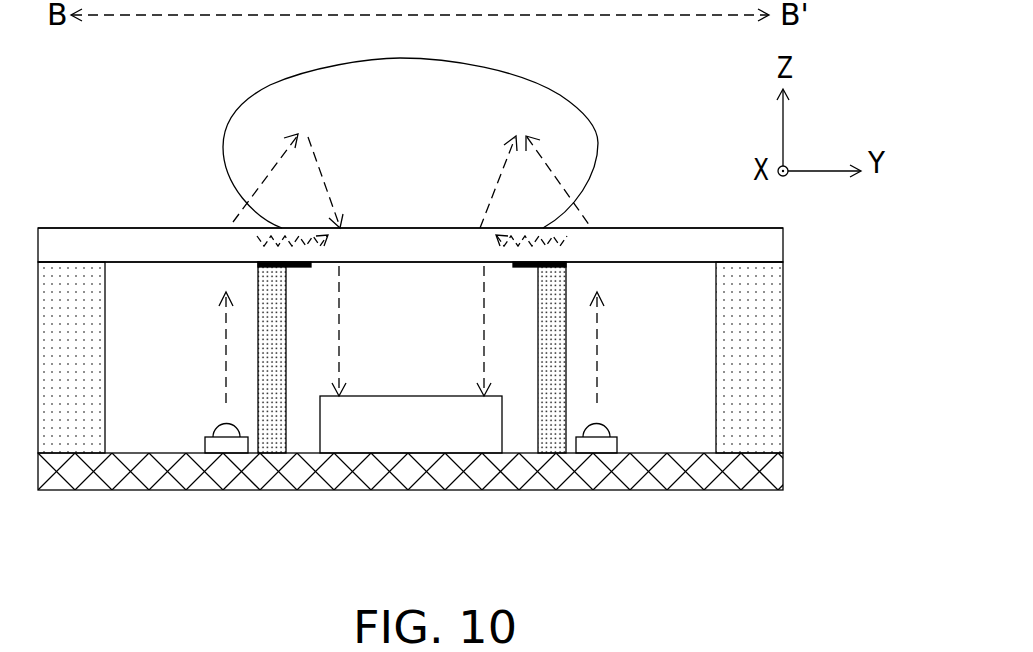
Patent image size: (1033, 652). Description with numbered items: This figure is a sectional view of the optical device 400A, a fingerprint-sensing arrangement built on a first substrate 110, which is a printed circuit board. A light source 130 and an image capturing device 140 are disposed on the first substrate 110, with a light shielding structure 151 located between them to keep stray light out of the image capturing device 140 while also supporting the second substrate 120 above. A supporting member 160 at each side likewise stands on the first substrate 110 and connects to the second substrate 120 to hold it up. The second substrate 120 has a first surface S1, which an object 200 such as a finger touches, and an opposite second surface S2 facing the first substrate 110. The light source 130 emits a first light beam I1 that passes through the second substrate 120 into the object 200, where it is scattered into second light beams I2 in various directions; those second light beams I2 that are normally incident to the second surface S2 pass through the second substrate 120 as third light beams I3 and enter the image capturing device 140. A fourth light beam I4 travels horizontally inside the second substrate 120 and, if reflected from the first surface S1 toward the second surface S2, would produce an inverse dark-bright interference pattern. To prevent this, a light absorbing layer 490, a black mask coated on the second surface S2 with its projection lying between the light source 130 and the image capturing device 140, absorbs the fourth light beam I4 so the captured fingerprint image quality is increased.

The optical device 400A is at (105, 135).
The object 200 is at (600, 147).
The second substrate 120 is at (770, 244).
The first substrate 110 is at (770, 472).
The light source 130 is at (600, 450).
The image capturing device 140 is at (402, 432).
The light shielding structure 151 is at (548, 448).
The supporting member 160 is at (80, 432).
The light absorbing layer 490 is at (566, 262).
The first surface S1 is at (136, 225).
The second surface S2 is at (140, 264).
The first light beam I1 is at (597, 363).
The second light beams I2 is at (503, 165).
The third light beams I3 is at (411, 331).
The fourth light beam I4 is at (412, 245).